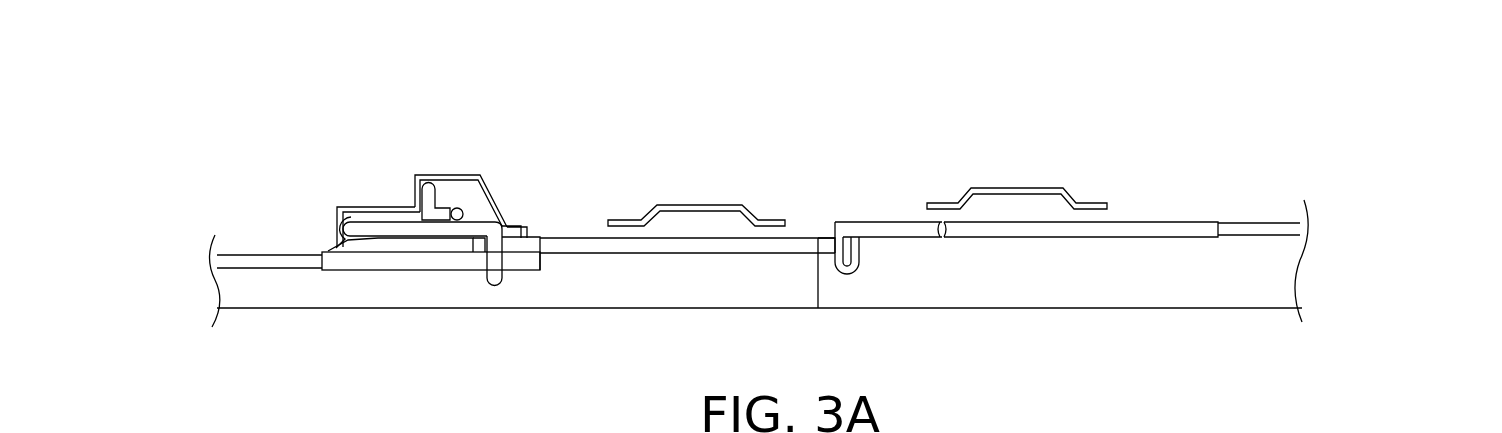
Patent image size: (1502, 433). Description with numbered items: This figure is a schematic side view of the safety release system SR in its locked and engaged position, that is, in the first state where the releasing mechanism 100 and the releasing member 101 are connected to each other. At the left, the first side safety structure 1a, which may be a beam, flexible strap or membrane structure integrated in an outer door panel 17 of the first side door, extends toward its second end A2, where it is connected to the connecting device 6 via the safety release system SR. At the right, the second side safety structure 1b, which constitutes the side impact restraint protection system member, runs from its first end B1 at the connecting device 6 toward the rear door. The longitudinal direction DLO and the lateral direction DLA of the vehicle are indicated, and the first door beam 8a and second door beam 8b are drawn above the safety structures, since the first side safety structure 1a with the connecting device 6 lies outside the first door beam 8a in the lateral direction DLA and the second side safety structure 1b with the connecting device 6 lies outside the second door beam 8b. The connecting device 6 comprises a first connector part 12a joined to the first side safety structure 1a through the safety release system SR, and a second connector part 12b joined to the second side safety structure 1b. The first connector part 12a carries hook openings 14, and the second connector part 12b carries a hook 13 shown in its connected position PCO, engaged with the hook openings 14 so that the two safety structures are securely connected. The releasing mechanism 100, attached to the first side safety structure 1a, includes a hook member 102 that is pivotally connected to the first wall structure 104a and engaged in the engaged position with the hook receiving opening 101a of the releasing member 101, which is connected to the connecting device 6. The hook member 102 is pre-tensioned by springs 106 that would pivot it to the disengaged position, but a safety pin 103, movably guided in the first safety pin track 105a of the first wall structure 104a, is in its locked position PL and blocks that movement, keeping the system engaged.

The first side safety structure 1a is at (262, 270).
The second side safety structure 1b is at (1250, 222).
The connecting device 6 is at (982, 275).
The first door beam 8a is at (690, 203).
The second door beam 8b is at (1014, 187).
The first connector part 12a is at (783, 253).
The second connector part 12b is at (1136, 221).
The hook 13 is at (867, 220).
The hook openings 14 is at (826, 238).
The outer door panel 17 is at (625, 308).
The releasing mechanism 100 is at (436, 270).
The releasing member 101 is at (563, 253).
The hook receiving opening 101a is at (512, 205).
The hook member 102 is at (382, 232).
The safety pin 103 is at (455, 208).
The first wall structure 104a is at (358, 252).
The first safety pin track 105a is at (417, 173).
The springs 106 is at (343, 208).
The safety release system SR is at (278, 148).
The second end A2 is at (248, 209).
The locked position PL is at (481, 310).
The connected position PCO is at (940, 98).
The first end B1 is at (1253, 270).
The longitudinal direction DLO is at (1408, 75).
The lateral direction DLA is at (1408, 75).